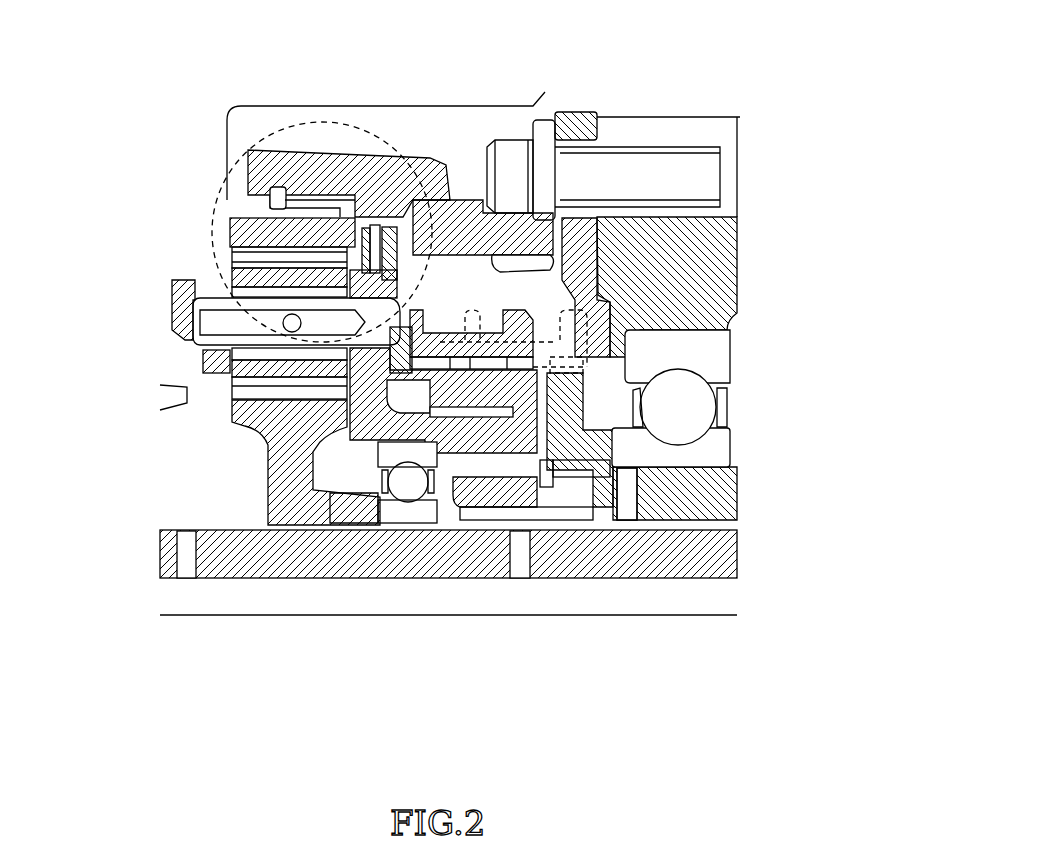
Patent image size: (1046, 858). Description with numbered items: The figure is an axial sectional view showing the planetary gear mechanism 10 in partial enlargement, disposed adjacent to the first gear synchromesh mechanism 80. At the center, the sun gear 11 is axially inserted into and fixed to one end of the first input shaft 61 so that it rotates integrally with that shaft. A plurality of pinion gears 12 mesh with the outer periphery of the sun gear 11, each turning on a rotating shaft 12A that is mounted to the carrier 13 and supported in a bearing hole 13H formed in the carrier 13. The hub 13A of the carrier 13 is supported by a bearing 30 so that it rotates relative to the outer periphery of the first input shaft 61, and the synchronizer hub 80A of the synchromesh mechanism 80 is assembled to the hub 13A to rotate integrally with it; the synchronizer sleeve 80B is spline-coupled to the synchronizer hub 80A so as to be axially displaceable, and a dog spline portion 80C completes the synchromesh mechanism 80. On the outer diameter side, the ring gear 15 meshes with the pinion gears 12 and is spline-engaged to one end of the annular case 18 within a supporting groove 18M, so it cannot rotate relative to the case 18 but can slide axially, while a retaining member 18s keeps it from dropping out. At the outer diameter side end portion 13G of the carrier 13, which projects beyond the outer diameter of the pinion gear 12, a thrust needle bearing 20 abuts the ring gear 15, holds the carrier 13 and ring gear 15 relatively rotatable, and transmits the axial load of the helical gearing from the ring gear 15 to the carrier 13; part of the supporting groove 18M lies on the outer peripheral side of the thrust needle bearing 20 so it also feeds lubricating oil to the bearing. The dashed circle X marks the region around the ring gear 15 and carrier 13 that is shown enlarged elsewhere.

The planetary gear mechanism 10 is at (120, 318).
The sun gear 11 is at (292, 470).
The pinion gear 12 is at (200, 376).
The rotating shaft 12A is at (175, 342).
The carrier 13 is at (232, 180).
The hub 13A is at (463, 440).
The outer diameter side end portion 13G is at (430, 106).
The bearing hole 13H is at (513, 331).
The ring gear 15 is at (222, 228).
The case 18 is at (278, 190).
The retaining member 18s is at (228, 128).
The supporting groove 18M is at (315, 205).
The thrust needle bearing 20 is at (397, 170).
The bearing 30 is at (403, 495).
The first input shaft 61 is at (398, 560).
The first gear synchromesh mechanism 80 is at (542, 307).
The synchronizer hub 80A is at (493, 403).
The synchronizer sleeve 80B is at (545, 240).
The dog spline portion 80C is at (600, 520).
The X part X is at (363, 140).